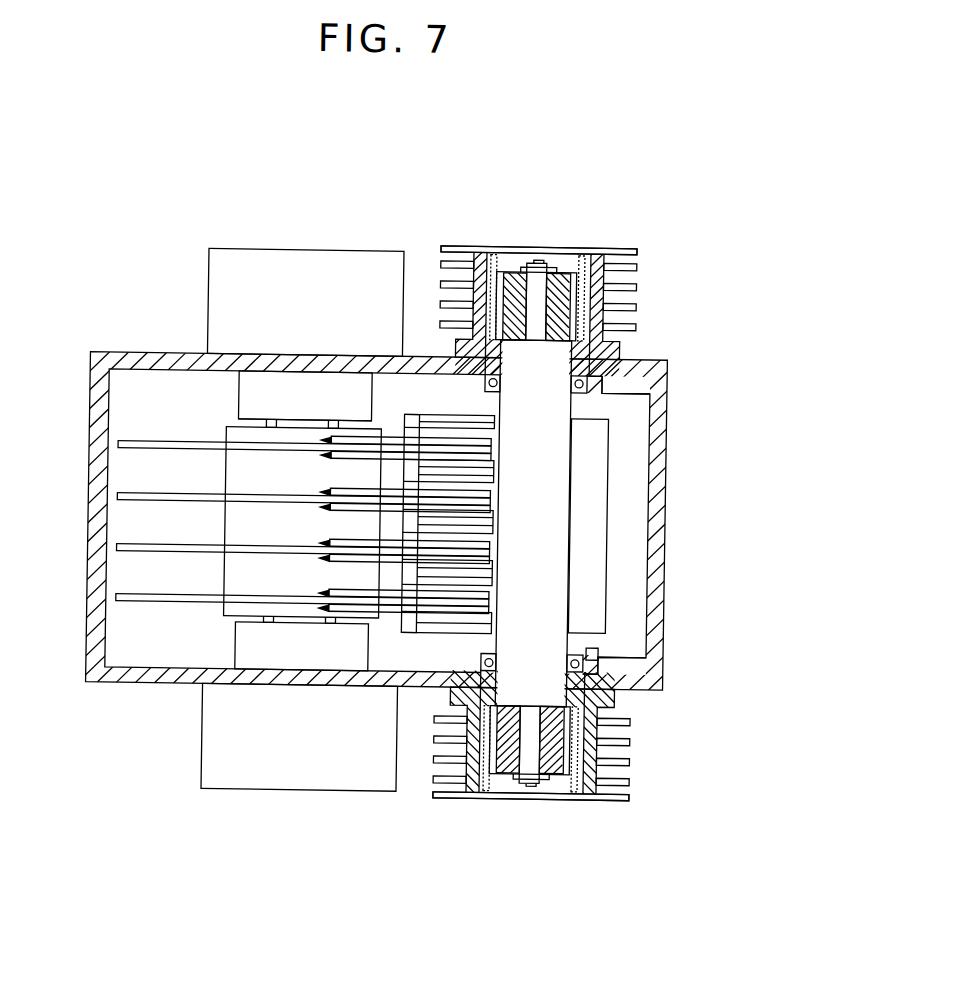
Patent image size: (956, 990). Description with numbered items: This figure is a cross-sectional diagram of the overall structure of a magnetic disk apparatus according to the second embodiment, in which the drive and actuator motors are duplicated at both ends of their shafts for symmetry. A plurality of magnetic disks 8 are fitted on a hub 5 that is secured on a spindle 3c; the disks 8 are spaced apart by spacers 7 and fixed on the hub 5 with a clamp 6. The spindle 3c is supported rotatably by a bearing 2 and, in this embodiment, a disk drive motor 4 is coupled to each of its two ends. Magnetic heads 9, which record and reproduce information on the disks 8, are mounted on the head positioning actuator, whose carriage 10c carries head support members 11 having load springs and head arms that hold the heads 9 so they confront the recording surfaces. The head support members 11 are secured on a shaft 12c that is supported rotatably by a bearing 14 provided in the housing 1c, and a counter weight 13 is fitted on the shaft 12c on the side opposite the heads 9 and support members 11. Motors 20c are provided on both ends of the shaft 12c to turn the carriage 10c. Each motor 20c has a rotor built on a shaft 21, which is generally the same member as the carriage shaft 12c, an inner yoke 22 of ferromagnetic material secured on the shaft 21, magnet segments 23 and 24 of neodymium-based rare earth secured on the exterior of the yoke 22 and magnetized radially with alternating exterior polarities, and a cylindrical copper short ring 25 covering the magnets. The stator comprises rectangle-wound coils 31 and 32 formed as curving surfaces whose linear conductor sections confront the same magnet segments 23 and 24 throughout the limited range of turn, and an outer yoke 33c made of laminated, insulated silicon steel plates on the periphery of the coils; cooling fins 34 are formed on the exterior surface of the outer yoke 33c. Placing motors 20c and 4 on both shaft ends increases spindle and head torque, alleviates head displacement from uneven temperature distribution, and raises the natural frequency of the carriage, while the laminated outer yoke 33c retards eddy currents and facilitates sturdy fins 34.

The housing 1c is at (95, 621).
The bearing 2 is at (246, 389).
The spindle 3c is at (276, 424).
The disk drive motor 4 is at (243, 279).
The hub 5 is at (226, 614).
The clamp 6 is at (246, 422).
The spacer 7 is at (127, 444).
The magnetic disk 8 is at (130, 597).
The magnetic head 9 is at (320, 594).
The carriage 10c is at (618, 558).
The head support member 11 is at (454, 592).
The shaft 12c is at (547, 510).
The counter weight 13 is at (591, 467).
The bearing 14 is at (583, 389).
The motor 20c is at (645, 272).
The shaft 21 is at (664, 358).
The inner yoke 22 is at (519, 266).
The magnet segment 23 is at (506, 266).
The magnet segment 24 is at (559, 265).
The short ring 25 is at (573, 250).
The coil 31 is at (583, 244).
The coil 32 is at (483, 245).
The outer yoke 33c is at (623, 236).
The cooling fins 34 is at (632, 308).